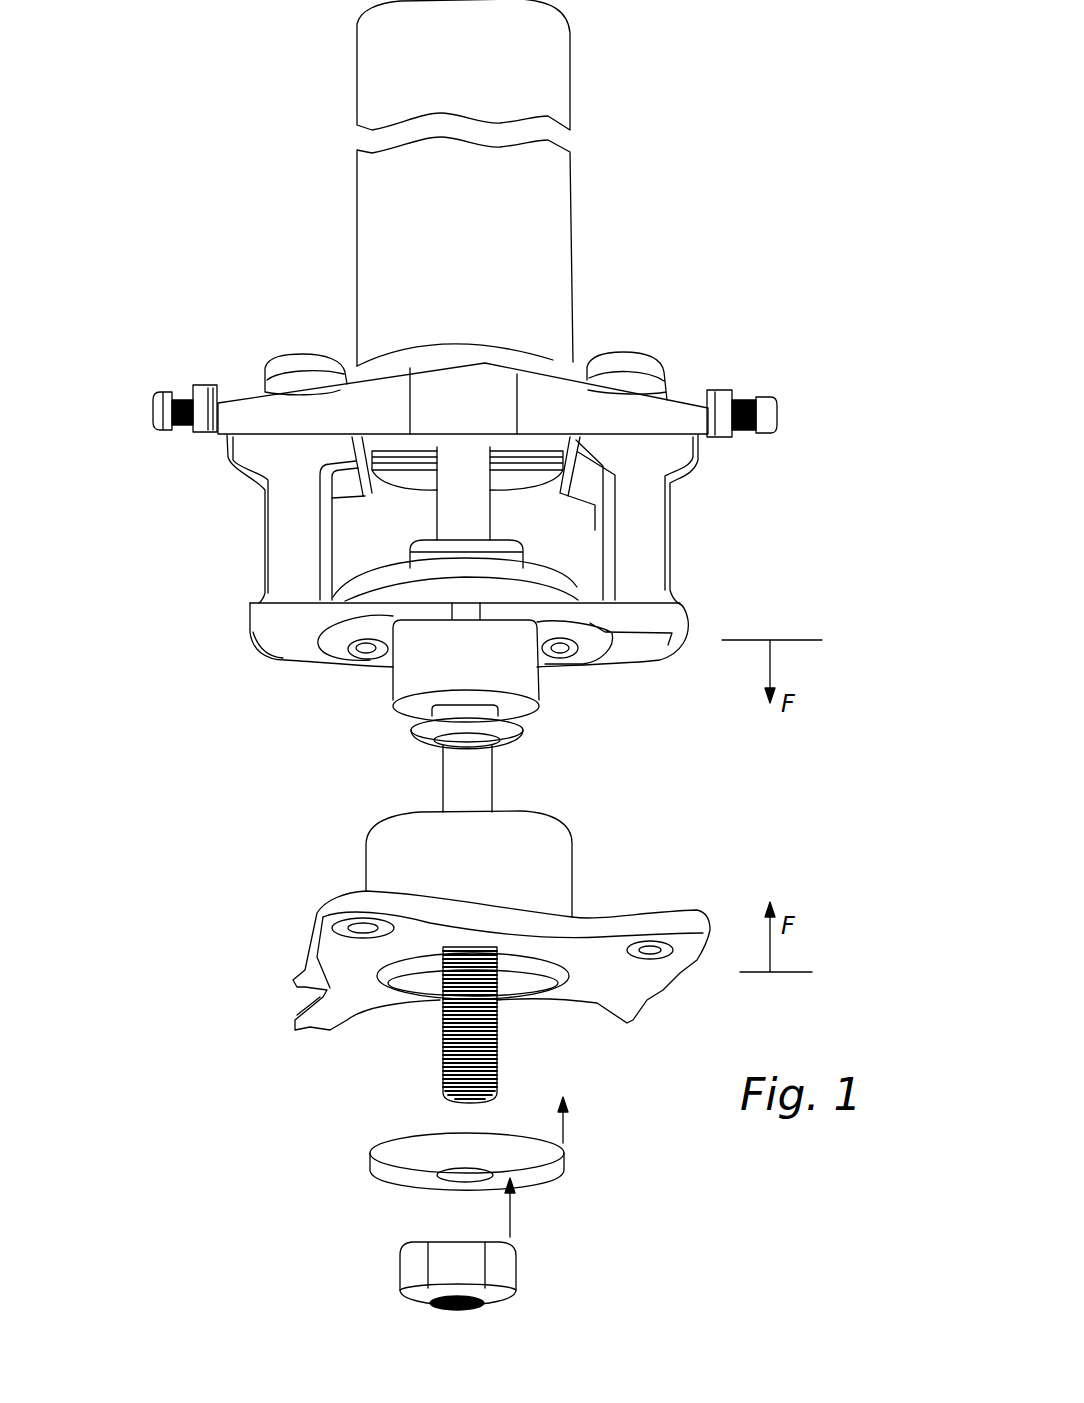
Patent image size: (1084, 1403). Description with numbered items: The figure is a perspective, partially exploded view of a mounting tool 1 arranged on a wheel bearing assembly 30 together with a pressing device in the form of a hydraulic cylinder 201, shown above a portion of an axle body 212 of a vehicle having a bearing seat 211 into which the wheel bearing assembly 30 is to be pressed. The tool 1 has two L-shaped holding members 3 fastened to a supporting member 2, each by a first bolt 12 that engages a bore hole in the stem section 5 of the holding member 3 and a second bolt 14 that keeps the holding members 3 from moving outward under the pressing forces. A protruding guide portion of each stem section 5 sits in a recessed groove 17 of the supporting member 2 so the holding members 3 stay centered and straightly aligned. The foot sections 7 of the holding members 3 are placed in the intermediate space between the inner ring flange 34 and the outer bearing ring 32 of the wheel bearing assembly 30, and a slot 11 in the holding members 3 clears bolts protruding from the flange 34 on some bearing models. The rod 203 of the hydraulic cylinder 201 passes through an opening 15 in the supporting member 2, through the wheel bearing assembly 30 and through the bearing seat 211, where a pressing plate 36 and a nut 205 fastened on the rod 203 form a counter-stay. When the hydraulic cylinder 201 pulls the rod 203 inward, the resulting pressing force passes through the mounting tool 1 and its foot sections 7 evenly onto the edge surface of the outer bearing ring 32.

The mounting tool 1 is at (782, 280).
The supporting member 2 is at (678, 413).
The L-shaped holding members 3 is at (238, 594).
The stem section 5 is at (283, 510).
The foot sections 7 is at (293, 647).
The slot 11 is at (330, 667).
The first bolt 12 is at (268, 365).
The second bolt 14 is at (152, 393).
The opening 15 is at (523, 447).
The recessed groove 17 is at (352, 462).
The wheel bearing assembly 30 is at (380, 732).
The outer bearing ring 32 is at (527, 690).
The inner ring flange 34 is at (376, 580).
The pressing plate 36 is at (553, 1160).
The hydraulic cylinder 201 is at (602, 158).
The rod 203 is at (480, 510).
The nut 205 is at (503, 1277).
The bearing seat 211 is at (420, 975).
The axle body 212 is at (663, 917).